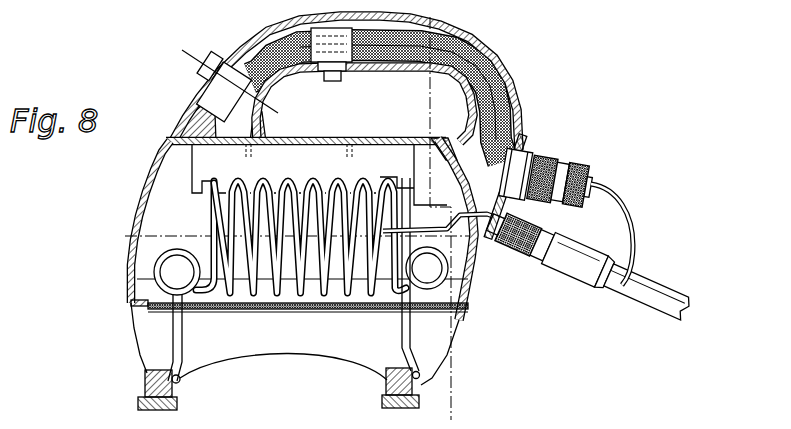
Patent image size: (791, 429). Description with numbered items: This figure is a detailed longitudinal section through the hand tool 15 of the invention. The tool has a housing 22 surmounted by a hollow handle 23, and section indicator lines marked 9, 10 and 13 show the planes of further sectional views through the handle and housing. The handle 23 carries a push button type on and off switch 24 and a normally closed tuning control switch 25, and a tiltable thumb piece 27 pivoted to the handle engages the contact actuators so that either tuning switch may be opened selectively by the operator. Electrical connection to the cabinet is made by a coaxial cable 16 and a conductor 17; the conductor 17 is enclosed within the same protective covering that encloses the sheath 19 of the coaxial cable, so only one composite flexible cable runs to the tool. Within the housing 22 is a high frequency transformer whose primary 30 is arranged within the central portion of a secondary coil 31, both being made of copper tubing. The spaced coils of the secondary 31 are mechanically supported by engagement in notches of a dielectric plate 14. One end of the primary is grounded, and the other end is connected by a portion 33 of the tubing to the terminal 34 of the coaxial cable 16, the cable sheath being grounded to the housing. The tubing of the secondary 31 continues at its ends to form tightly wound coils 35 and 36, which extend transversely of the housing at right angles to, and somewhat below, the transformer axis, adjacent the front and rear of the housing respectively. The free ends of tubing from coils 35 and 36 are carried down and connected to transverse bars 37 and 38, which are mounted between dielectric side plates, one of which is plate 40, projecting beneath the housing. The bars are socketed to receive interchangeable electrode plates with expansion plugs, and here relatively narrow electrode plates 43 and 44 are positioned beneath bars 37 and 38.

The section line 9- 9 is at (116, 238).
The section line 10- 10 is at (426, 17).
The section line 13-13 through handle 13 is at (188, 52).
The dielectric plate 14 is at (387, 156).
The hand tool 15 is at (126, 275).
The coaxial cable 16 is at (616, 277).
The conductor 17 is at (633, 218).
The sheath of the coaxial cable 19 is at (634, 292).
The housing 22 is at (156, 171).
The hollow handle 23 is at (504, 64).
The push button type on and off switch 24 is at (330, 82).
The tuning control switch 25 is at (210, 99).
The tiltable thumb piece 27 is at (200, 70).
The primary 30 is at (299, 191).
The secondary coil 31 is at (331, 294).
The portion of the tubing 33 is at (443, 232).
The terminal of the coaxial cable 34 is at (498, 211).
The tightly wound coil 35 is at (171, 251).
The tightly wound coil 36 is at (427, 293).
The bar 37 is at (157, 370).
The bar 38 is at (388, 369).
The dielectric side plate 40 is at (339, 349).
The electrode plate 43 is at (138, 401).
The electrode plate 44 is at (382, 403).